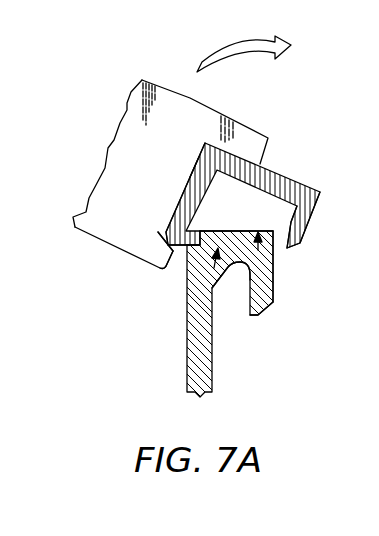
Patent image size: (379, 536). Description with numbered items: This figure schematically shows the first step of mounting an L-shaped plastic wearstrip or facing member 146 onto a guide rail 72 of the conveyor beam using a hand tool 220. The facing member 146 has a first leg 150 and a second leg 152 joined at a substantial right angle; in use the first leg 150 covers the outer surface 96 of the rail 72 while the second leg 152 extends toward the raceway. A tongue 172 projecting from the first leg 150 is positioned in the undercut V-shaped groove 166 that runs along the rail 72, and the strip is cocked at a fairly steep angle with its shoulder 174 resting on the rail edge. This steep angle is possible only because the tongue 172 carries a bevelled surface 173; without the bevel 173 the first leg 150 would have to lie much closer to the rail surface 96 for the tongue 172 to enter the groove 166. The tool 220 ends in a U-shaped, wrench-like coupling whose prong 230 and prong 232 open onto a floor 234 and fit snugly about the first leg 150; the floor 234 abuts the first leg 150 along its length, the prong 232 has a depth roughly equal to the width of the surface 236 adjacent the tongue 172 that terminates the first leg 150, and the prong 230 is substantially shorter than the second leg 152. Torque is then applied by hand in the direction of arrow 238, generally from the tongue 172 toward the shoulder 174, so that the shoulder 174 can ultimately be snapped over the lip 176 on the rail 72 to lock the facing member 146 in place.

The guide rail 72 is at (200, 358).
The outer surface 96 is at (278, 264).
The facing member 146 is at (242, 187).
The first leg 150 is at (184, 189).
The second leg 152 is at (293, 188).
The V-shaped groove 166 is at (217, 287).
The tongue 172 is at (236, 214).
The bevelled surface 173 is at (177, 262).
The shoulder 174 is at (300, 245).
The lip 176 is at (270, 305).
The tool 220 is at (170, 150).
The prong 230 is at (257, 111).
The prong 232 is at (157, 254).
The floor 234 is at (191, 168).
The surface 236 is at (160, 230).
The arrow 238 is at (244, 37).